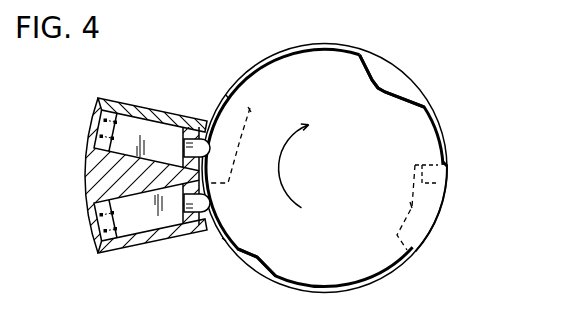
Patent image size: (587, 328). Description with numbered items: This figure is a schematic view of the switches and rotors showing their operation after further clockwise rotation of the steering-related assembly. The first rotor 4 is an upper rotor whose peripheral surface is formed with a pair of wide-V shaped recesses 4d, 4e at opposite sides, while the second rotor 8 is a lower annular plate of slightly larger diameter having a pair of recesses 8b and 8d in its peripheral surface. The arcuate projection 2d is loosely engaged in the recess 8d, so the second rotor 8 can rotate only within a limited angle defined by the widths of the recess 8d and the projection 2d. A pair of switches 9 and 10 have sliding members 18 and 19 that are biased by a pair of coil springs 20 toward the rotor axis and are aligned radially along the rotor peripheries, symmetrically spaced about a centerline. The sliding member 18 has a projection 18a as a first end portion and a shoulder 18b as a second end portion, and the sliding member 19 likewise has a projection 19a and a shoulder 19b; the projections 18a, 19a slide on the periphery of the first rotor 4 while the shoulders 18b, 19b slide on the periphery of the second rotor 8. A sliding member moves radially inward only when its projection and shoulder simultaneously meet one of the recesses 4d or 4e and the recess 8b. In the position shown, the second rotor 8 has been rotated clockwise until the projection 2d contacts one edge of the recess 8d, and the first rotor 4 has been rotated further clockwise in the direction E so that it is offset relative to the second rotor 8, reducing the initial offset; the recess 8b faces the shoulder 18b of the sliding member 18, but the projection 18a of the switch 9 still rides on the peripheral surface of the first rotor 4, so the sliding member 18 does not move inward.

The switch 9 is at (182, 68).
The switch 10 is at (172, 285).
The sliding member 18 is at (161, 107).
The projection 18a is at (196, 140).
The shoulder 18b is at (249, 68).
The sliding member 19 is at (145, 250).
The projection 19a is at (197, 214).
The shoulder 19b is at (226, 243).
The coil spring 20 is at (108, 124).
The second rotor 8 is at (408, 67).
The recess 8b is at (209, 140).
The recess 8d is at (411, 205).
The first rotor 4 is at (425, 130).
The recess 4d is at (400, 97).
The recess 4e is at (254, 258).
The arcuate projection 2d is at (432, 172).
The direction of rotation E is at (298, 155).